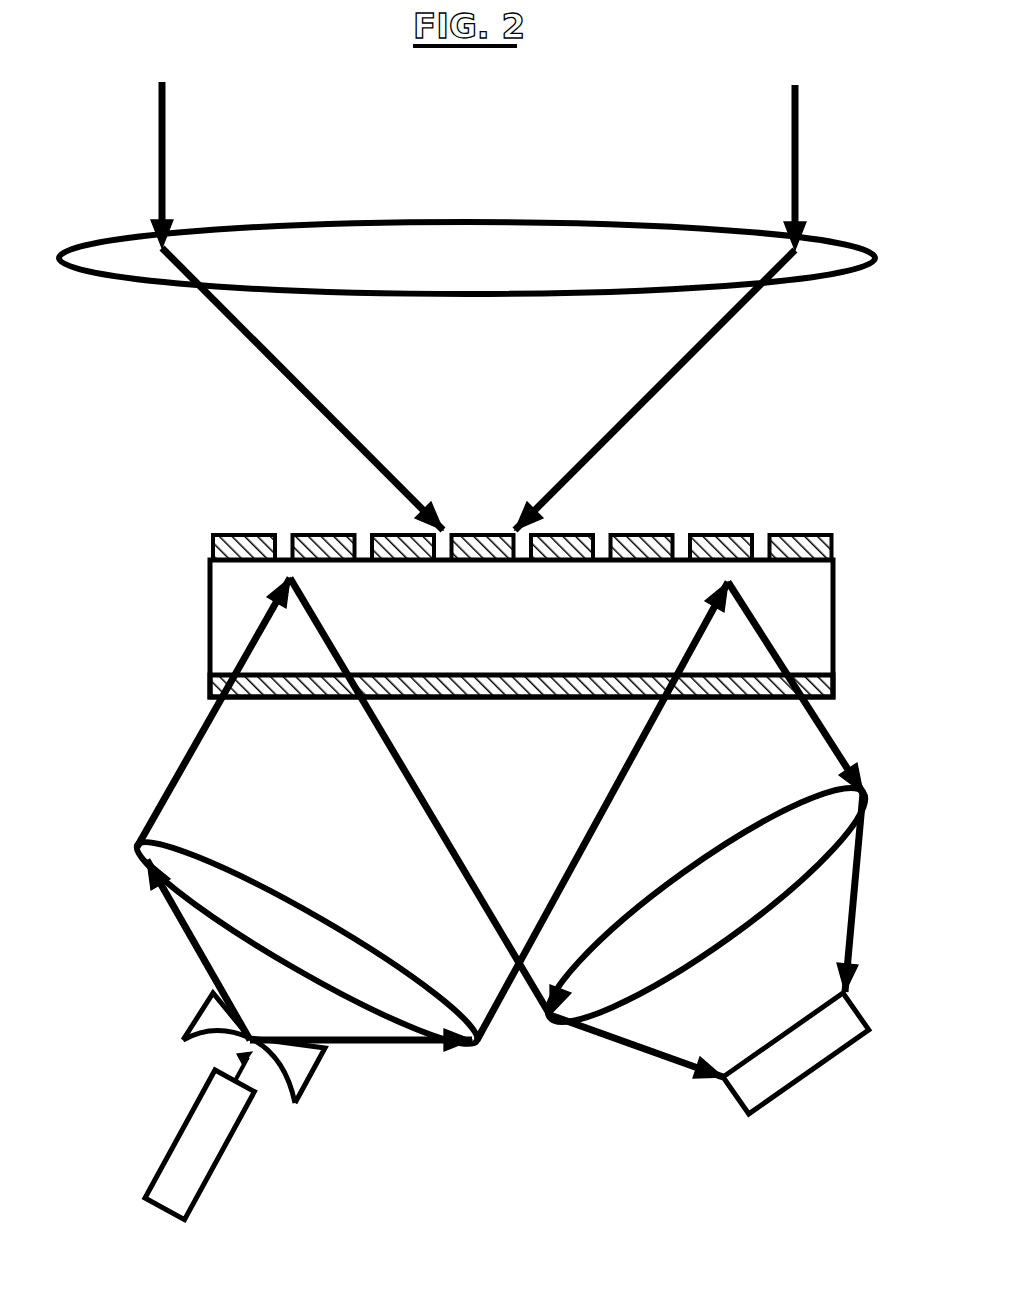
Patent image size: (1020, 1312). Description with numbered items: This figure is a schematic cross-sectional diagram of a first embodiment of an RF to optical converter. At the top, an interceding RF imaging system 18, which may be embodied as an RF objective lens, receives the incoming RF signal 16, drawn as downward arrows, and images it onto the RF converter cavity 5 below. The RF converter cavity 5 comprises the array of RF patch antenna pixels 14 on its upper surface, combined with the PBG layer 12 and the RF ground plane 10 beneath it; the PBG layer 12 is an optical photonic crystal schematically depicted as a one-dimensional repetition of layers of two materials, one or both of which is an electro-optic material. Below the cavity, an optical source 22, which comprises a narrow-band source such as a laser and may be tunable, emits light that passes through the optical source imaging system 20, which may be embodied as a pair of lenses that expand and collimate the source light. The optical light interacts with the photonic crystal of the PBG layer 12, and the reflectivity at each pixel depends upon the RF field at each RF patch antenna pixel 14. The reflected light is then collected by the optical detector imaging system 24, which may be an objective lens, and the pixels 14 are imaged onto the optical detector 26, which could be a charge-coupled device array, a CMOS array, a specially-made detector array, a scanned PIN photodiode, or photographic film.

The RF converter cavity 5 is at (114, 597).
The RF ground plane 10 is at (210, 674).
The PBG layer 12 is at (210, 606).
The RF patch antenna pixels 14 is at (210, 538).
The incoming RF signal 16 is at (486, 176).
The RF imaging system 18 is at (785, 290).
The optical source imaging system 20 is at (200, 1010).
The optical source 22 is at (180, 1132).
The optical detector imaging system 24 is at (713, 943).
The optical detector 26 is at (783, 1093).